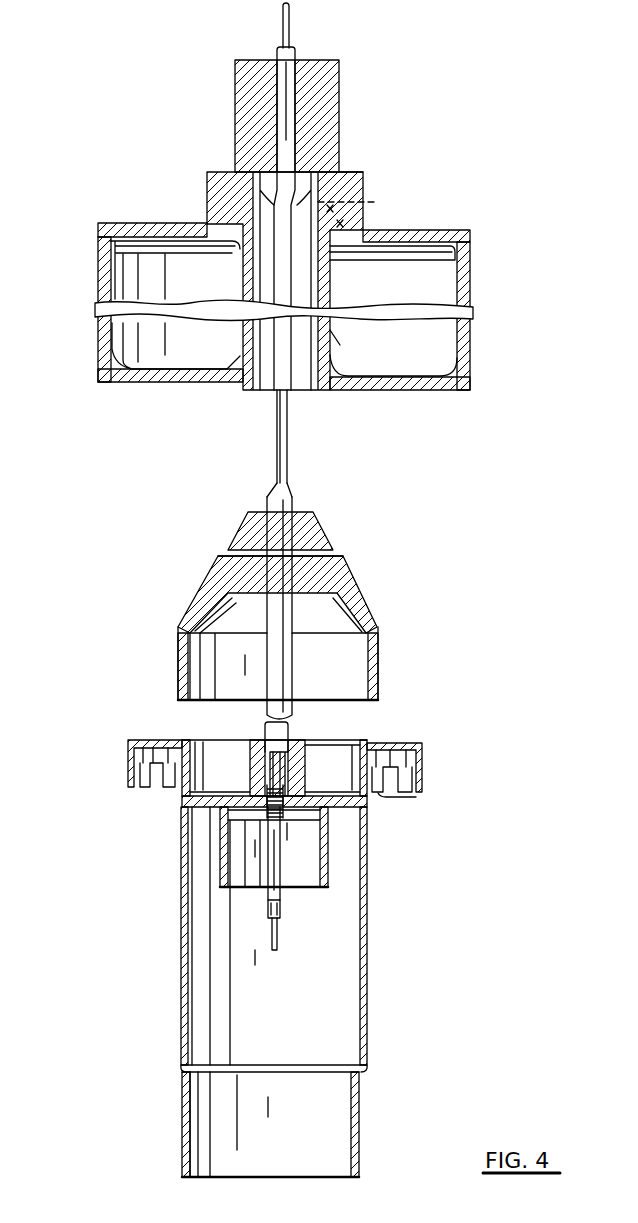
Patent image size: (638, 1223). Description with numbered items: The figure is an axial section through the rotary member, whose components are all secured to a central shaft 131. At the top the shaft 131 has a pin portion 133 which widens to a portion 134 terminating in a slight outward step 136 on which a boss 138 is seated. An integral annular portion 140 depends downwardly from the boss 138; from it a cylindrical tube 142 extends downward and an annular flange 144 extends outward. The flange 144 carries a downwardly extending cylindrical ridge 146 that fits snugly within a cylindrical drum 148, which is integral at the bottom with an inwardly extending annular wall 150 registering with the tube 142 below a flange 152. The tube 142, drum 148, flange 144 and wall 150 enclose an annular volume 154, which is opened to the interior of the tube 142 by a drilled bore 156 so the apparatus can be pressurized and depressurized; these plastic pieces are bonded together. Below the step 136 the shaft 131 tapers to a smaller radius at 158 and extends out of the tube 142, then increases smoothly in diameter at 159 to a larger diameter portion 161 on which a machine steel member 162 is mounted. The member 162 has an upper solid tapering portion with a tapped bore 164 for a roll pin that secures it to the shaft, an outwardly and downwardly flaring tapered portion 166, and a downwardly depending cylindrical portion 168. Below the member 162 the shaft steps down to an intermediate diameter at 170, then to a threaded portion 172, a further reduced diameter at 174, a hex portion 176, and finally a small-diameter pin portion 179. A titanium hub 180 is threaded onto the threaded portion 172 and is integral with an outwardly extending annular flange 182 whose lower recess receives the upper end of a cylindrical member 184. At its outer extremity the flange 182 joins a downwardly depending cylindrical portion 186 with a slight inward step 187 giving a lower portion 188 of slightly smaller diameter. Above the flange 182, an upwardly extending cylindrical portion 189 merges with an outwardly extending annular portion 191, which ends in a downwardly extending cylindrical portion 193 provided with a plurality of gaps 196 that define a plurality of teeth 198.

The central shaft 131 is at (281, 393).
The pin portion 133 is at (283, 20).
The widened shaft portion 134 is at (280, 131).
The outward step 136 is at (276, 178).
The boss 138 is at (240, 63).
The annular portion 140 is at (222, 196).
The cylindrical tube 142 is at (330, 289).
The annular flange 144 is at (153, 222).
The cylindrical ridge 146 is at (112, 242).
The cylindrical drum 148 is at (471, 289).
The annular wall 150 is at (176, 383).
The flange 152 is at (238, 357).
The annular volume 154 is at (393, 353).
The drilled bore 156 is at (370, 208).
The tapered smaller-radius shaft portion 158 is at (347, 200).
The diameter transition 159 is at (272, 492).
The larger diameter shaft portion 161 is at (281, 679).
The machine steel member 162 is at (222, 572).
The tapped bore 164 is at (334, 555).
The tapered portion 166 is at (192, 615).
The cylindrical portion 168 is at (180, 670).
The intermediate diameter shaft portion 170 is at (270, 772).
The threaded portion 172 is at (267, 815).
The reduced diameter shaft portion 174 is at (276, 872).
The hex portion 176 is at (270, 918).
The pin portion 179 is at (278, 940).
The hub 180 is at (263, 738).
The annular flange 182 is at (340, 804).
The cylindrical member 184 is at (328, 860).
The cylindrical portion 186 is at (365, 962).
The inward step 187 is at (366, 1070).
The lower portion 188 is at (360, 1130).
The upwardly extending cylindrical portion 189 is at (372, 767).
The annular portion 191 is at (373, 742).
The downwardly extending cylindrical portion 193 is at (424, 762).
The gaps 196 is at (386, 797).
The teeth 198 is at (395, 770).